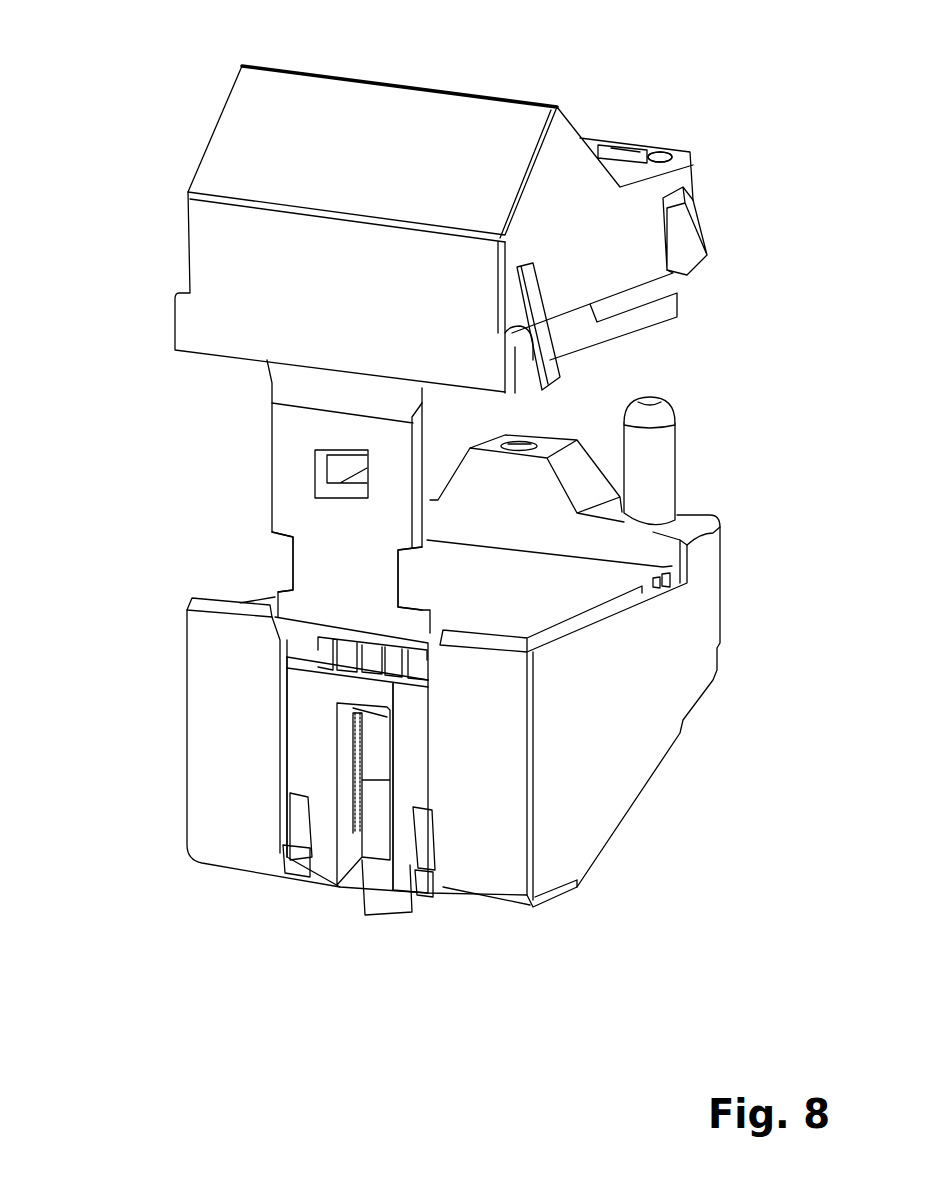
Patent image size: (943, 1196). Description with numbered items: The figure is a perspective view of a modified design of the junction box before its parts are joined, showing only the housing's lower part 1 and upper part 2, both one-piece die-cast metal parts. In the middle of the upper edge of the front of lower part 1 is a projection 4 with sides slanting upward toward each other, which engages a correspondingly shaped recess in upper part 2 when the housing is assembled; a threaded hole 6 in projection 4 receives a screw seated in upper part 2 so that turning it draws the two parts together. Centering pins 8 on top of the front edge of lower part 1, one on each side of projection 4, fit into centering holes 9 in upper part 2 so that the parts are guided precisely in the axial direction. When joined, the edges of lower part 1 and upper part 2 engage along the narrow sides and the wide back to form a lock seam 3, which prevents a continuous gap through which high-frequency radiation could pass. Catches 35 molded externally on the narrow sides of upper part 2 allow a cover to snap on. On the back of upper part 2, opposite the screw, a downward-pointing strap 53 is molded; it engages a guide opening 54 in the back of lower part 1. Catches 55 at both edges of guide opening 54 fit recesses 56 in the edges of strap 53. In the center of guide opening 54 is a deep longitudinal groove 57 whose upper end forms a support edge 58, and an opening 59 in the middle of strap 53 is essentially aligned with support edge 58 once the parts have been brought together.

The lower part 1 is at (603, 762).
The upper part 2 is at (220, 252).
The lock seam 3 is at (215, 608).
The projection 4 is at (585, 492).
The threaded hole 6 is at (535, 448).
The centering pins 8 is at (651, 478).
The centering holes 9 is at (657, 158).
The catches 35 is at (552, 362).
The strap 53 is at (292, 485).
The guide opening 54 is at (307, 712).
The catches 55 is at (425, 843).
The recesses 56 is at (402, 583).
The groove 57 is at (378, 827).
The support edge 58 is at (370, 717).
The opening 59 is at (342, 470).